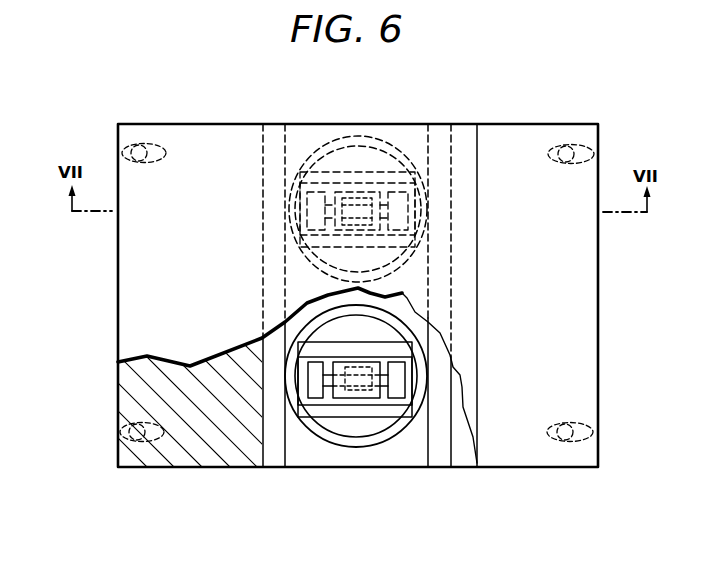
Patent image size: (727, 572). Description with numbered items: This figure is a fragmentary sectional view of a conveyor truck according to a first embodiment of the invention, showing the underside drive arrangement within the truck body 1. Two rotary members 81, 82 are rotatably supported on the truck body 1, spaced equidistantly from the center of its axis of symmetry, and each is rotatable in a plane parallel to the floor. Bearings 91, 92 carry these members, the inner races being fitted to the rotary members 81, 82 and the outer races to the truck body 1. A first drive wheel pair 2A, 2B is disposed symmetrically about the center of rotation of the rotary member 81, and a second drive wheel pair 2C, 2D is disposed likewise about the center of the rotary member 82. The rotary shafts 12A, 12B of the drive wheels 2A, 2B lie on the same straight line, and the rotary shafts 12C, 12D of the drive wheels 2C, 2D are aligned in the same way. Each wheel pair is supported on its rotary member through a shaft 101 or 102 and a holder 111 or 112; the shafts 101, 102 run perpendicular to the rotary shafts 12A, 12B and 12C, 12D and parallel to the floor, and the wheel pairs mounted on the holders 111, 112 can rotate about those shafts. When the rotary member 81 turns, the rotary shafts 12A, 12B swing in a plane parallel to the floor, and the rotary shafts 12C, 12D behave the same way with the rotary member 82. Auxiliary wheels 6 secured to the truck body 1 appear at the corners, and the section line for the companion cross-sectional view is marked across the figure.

The truck body 1 is at (598, 304).
The auxiliary wheels 6 is at (598, 425).
The drive wheel 2A is at (310, 172).
The drive wheel 2B is at (292, 232).
The drive wheel 2C is at (288, 410).
The drive wheel 2D is at (330, 414).
The rotary shaft 12A is at (359, 186).
The rotary shaft 12B is at (301, 208).
The rotary shaft 12C is at (305, 416).
The rotary shaft 12D is at (347, 406).
The rotary member 81 is at (351, 198).
The rotary member 82 is at (386, 379).
The bearing 91 is at (353, 246).
The bearing 92 is at (373, 406).
The shaft 101 is at (427, 192).
The shaft 102 is at (412, 424).
The holder 111 is at (397, 182).
The holder 112 is at (360, 399).